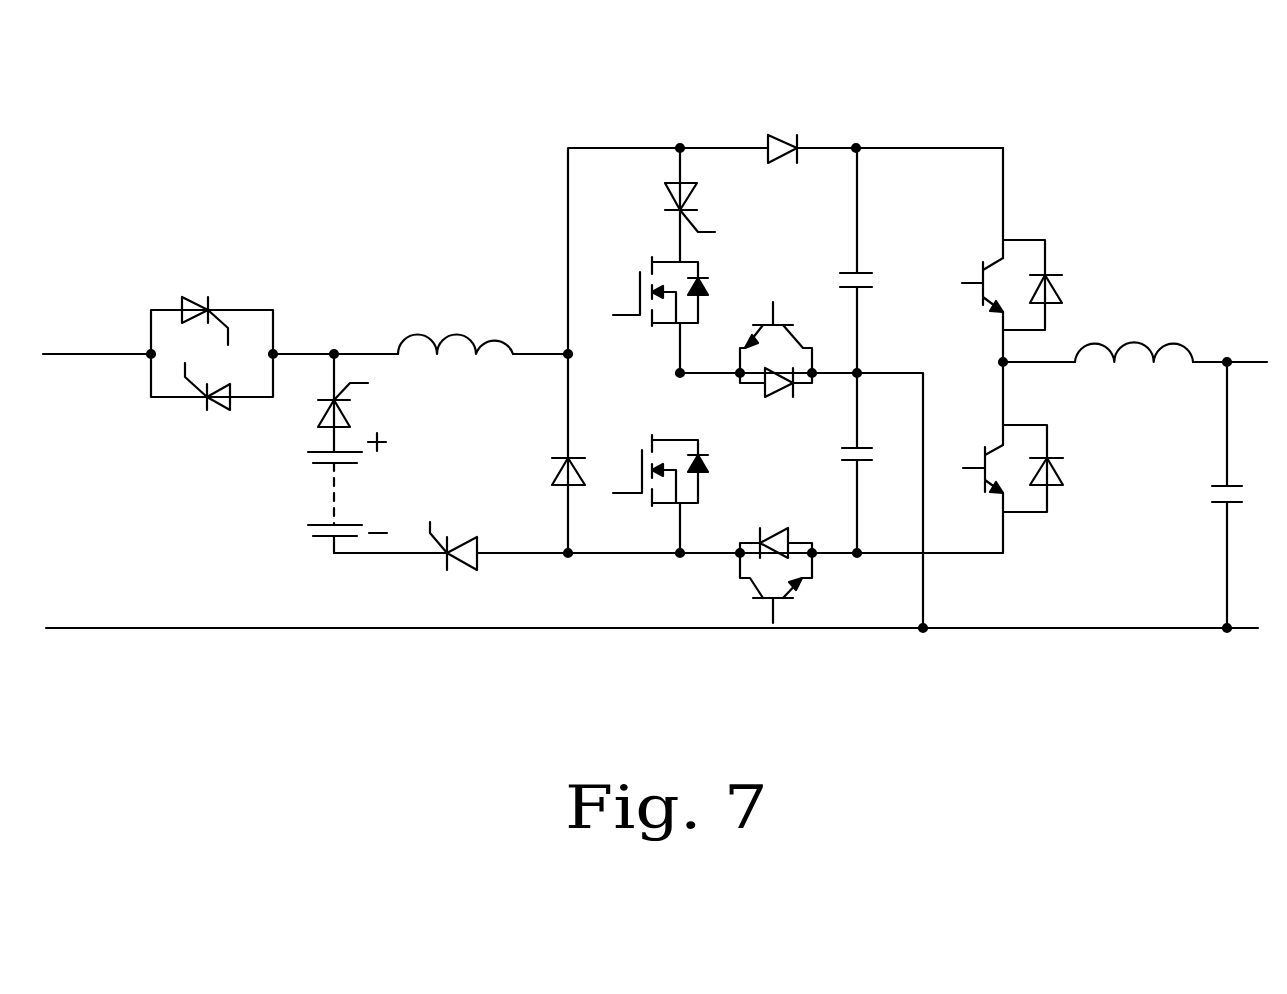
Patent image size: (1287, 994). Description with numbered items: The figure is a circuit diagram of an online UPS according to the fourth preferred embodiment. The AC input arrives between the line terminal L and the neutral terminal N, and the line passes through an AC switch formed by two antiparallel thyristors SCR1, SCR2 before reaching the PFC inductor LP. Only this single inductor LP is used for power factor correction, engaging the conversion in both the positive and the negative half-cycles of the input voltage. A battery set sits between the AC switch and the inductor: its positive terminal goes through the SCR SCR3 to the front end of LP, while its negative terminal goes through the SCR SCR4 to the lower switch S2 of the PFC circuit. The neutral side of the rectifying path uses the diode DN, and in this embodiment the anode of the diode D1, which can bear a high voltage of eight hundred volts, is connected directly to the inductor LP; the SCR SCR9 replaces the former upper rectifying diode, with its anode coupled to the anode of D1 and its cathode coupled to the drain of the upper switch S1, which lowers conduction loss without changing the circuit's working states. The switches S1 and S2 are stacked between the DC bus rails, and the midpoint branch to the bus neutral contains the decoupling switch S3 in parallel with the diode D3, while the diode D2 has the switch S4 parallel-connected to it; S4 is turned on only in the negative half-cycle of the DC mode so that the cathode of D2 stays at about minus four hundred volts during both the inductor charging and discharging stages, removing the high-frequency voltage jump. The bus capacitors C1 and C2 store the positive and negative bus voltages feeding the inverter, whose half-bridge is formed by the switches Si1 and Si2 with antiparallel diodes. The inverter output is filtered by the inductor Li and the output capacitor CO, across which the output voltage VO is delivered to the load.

The line input terminal L is at (97, 330).
The neutral terminal N is at (652, 603).
The first input thyristor SCR1 is at (210, 302).
The second input thyristor SCR2 is at (214, 407).
The SCR SCR3 is at (377, 403).
The SCR SCR4 is at (453, 570).
The SCR SCR9 is at (721, 205).
The PFC inductor LP is at (422, 323).
The diode of the rectifying bridge DN is at (546, 453).
The diode D1 is at (779, 125).
The diode D2 is at (776, 522).
The diode D3 is at (776, 408).
The upper switch S1 is at (658, 299).
The lower switch S2 is at (659, 479).
The decoupling switch S3 is at (778, 325).
The switch S4 is at (789, 592).
The upper DC bus capacitor C1 is at (875, 260).
The capacitor C2 is at (879, 463).
The upper inverter IGBT Si1 is at (1034, 257).
The lower inverter IGBT Si2 is at (1039, 457).
The output filter inductor Li is at (1135, 333).
The output capacitor CO is at (1210, 497).
The output voltage VO is at (1252, 564).